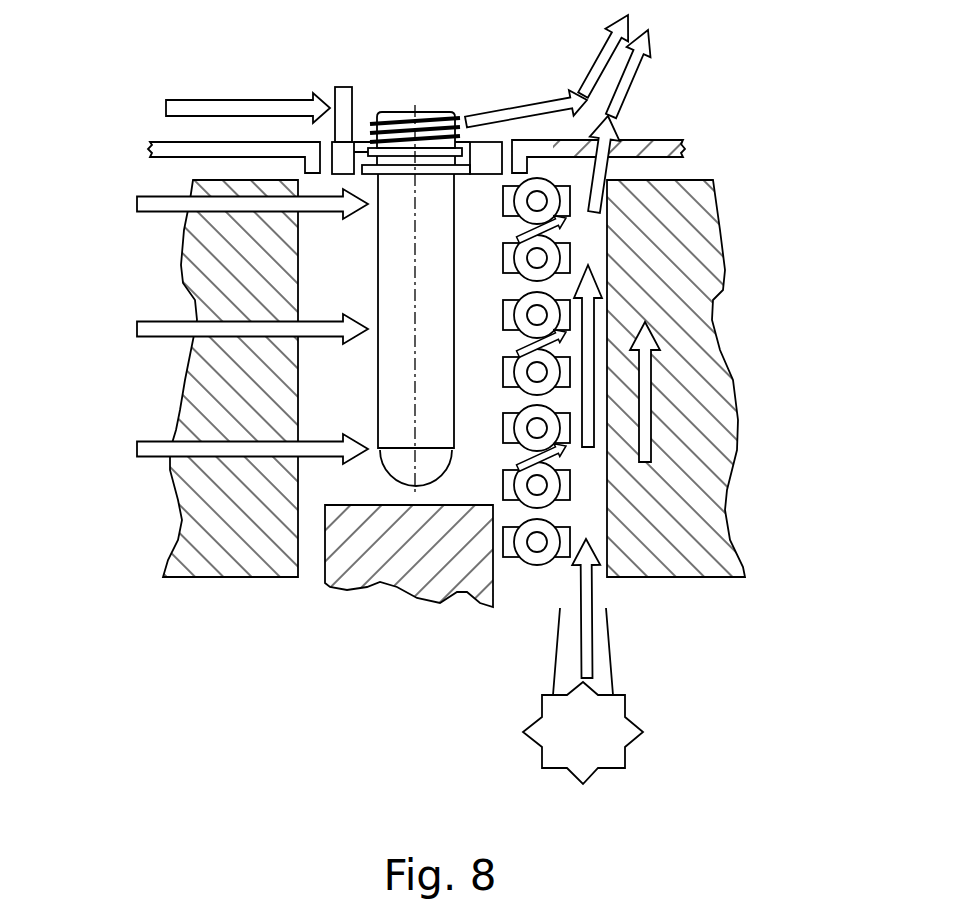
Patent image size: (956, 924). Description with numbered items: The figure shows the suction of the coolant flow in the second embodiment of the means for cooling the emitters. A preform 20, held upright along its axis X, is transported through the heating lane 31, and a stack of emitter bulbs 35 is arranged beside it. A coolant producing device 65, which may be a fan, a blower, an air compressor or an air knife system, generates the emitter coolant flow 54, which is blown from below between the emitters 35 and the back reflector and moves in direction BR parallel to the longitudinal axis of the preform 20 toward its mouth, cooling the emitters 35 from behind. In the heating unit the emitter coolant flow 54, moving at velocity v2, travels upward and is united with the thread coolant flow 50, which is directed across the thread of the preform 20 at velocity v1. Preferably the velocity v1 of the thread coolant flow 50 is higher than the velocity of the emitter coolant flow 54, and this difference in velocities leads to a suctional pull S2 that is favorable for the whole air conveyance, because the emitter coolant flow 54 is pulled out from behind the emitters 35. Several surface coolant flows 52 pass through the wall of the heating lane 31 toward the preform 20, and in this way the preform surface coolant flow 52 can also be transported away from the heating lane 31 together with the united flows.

The preform 20 is at (402, 286).
The heating lane 31 is at (312, 493).
The emitter bulbs 35 is at (568, 250).
The thread coolant flow 50 is at (595, 77).
The surface coolant flow 52 is at (232, 326).
The emitter coolant flow 54 is at (625, 90).
The coolant producing device 65 is at (568, 748).
The velocity of the thread coolant flow v1 is at (253, 100).
The flow velocity v2 is at (594, 325).
The suctional pull S2 is at (624, 60).
The axis X is at (417, 285).
The direction of the emitter coolant flow BR is at (662, 392).